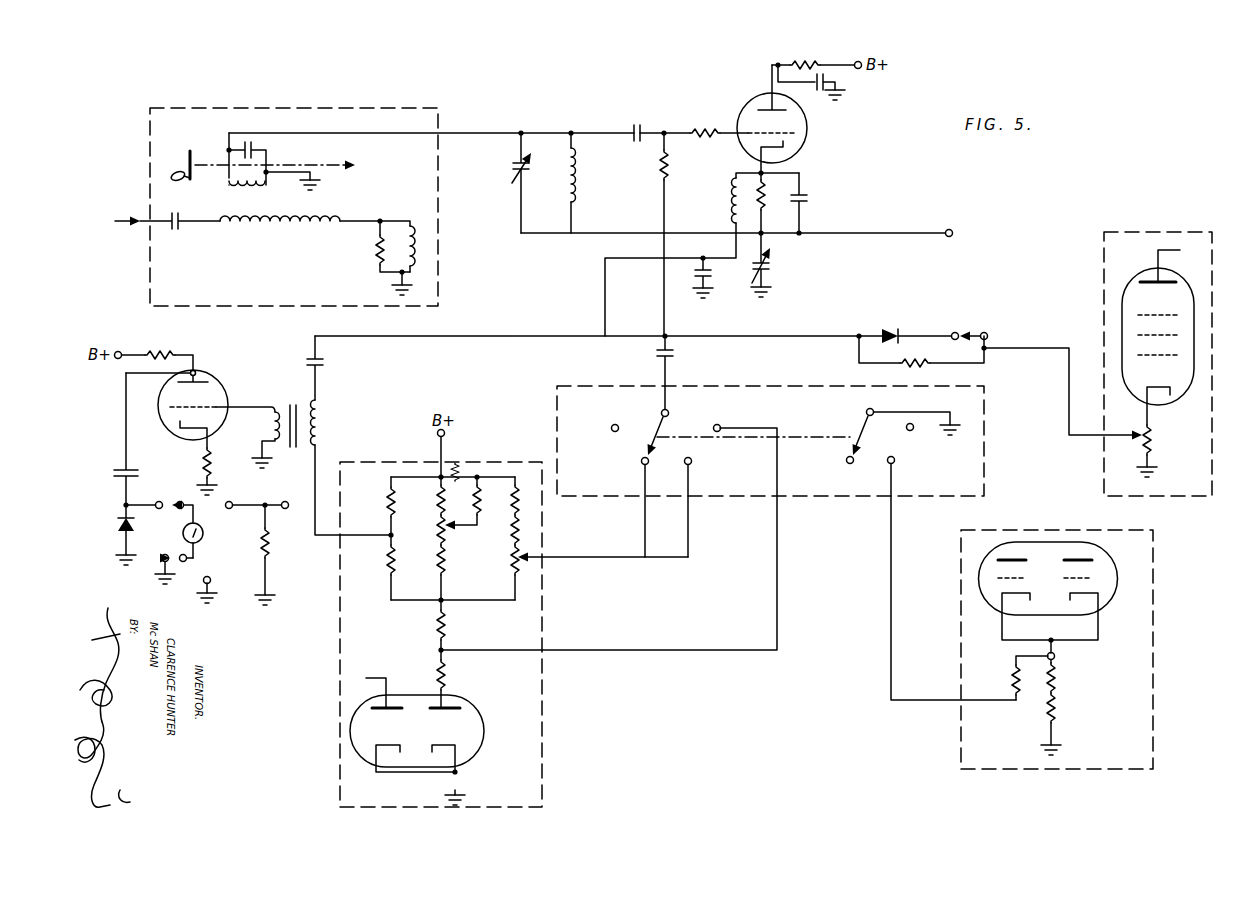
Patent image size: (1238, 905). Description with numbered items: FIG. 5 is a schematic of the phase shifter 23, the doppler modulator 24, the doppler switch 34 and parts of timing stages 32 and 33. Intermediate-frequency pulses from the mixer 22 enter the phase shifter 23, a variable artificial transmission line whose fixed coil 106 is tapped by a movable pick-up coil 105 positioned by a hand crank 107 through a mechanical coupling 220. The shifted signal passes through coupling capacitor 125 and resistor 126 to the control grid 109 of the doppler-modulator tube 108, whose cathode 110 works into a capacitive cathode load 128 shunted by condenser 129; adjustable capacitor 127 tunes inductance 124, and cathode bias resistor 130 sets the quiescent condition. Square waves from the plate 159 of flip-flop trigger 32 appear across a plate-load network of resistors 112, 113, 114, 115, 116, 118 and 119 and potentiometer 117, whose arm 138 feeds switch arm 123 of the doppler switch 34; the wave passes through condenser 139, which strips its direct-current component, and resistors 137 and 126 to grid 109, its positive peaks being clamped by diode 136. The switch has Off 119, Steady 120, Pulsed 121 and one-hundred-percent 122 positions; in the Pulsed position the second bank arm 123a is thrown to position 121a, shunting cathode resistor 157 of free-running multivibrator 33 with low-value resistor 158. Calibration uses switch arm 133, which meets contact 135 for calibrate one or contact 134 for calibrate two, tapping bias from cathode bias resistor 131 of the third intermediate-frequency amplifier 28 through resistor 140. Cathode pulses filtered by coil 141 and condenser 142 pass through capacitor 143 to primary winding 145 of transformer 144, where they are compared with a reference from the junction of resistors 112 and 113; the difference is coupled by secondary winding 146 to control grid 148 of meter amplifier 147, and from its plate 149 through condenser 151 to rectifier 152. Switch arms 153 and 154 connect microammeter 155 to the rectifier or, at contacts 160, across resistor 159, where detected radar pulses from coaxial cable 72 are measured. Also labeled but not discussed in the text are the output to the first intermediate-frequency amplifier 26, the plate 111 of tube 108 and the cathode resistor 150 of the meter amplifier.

The mixer 22 is at (149, 213).
The phase shifter 23 is at (345, 108).
The doppler modulator 24 is at (700, 82).
The first I.F. amplifier output 26 is at (906, 239).
The third intermediate-frequency amplifier 28 is at (1160, 232).
The flip-flop trigger 32 is at (542, 712).
The free running multivibrator 33 is at (1153, 583).
The doppler switch 34 is at (812, 496).
The coaxial cable 72 is at (283, 521).
The pick-up coil 105 is at (230, 185).
The fixed coil 106 is at (273, 221).
The hand crank 107 is at (210, 150).
The doppler-modulator tube 108 is at (748, 92).
The control grid 109 is at (744, 139).
The cathode 110 is at (798, 145).
The plate 111 is at (798, 106).
The resistor 112 is at (388, 568).
The resistor 113 is at (386, 505).
The resistor 114 is at (438, 512).
The resistor 115 is at (480, 480).
The resistor 116 is at (520, 510).
The potentiometer 117 is at (507, 562).
The resistor 118 is at (448, 619).
The resistor 119 is at (630, 412).
The Steady position 120 is at (640, 467).
The Pulsed position 121 is at (687, 470).
The Pulsed position of second switch bank 121a is at (893, 471).
The 100% position 122 is at (718, 426).
The switch arm 123 is at (673, 417).
The switch blade 123a is at (860, 410).
The inductance 124 is at (578, 165).
The coupling capacitor 125 is at (633, 124).
The resistor 126 is at (714, 126).
The adjustable capacitor 127 is at (513, 156).
The capacitance cathode load 128 is at (773, 266).
The condenser 129 is at (808, 192).
The cathode bias resistor 130 is at (770, 207).
The cathode bias resistor 131 is at (1152, 430).
The switch arm 133 is at (986, 332).
The calibrate 2 contact 134 is at (950, 332).
The calibrate 1 contact 135 is at (966, 310).
The clamper diode 136 is at (890, 324).
The resistor 137 is at (660, 195).
The potentiometer arm 138 is at (621, 557).
The coupling capacitor 139 is at (652, 356).
The resistor 140 is at (940, 350).
The coil 141 is at (730, 207).
The condenser 142 is at (714, 293).
The coupling capacitor 143 is at (328, 362).
The transformer 144 is at (295, 448).
The primary winding 145 is at (320, 418).
The secondary winding 146 is at (275, 417).
The meter amplifier 147 is at (224, 390).
The control grid 148 is at (225, 404).
The plate 149 is at (196, 373).
The cathode resistor 150 is at (200, 432).
The coupling condenser 151 is at (120, 462).
The rectifier 152 is at (118, 517).
The switch arm 153 is at (180, 498).
The switch arm 154 is at (187, 564).
The microammeter 155 is at (228, 532).
The cathode load resistor 157 is at (1055, 680).
The resistor 158 is at (1012, 677).
The plate 159 is at (456, 704).
The contacts 160 is at (244, 492).
The mechanical coupling 220 is at (299, 164).